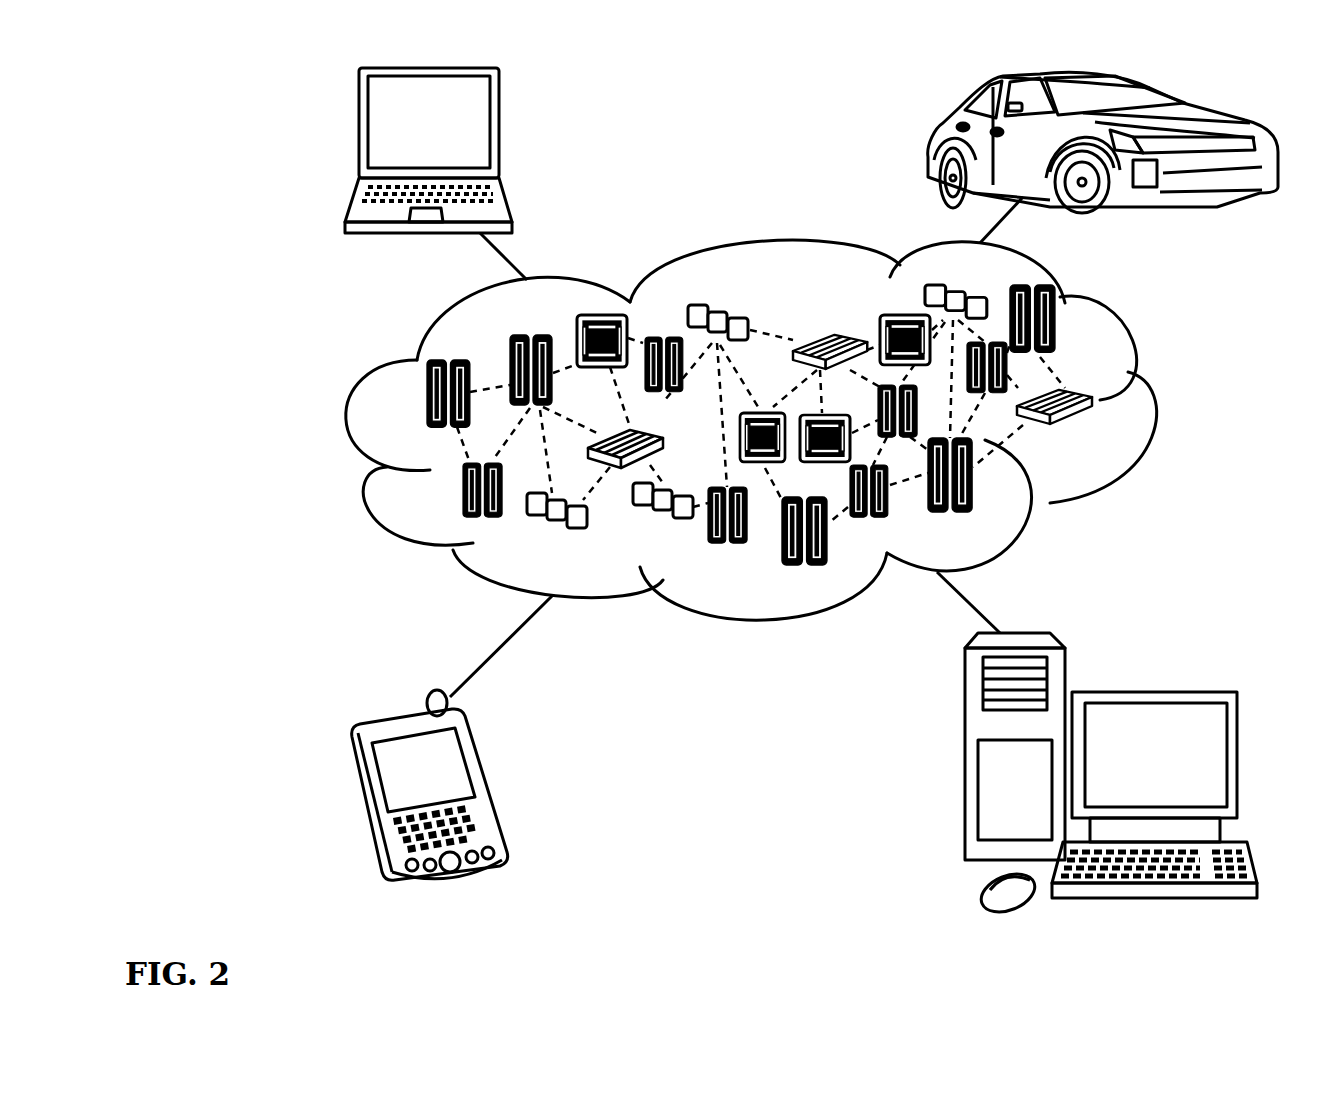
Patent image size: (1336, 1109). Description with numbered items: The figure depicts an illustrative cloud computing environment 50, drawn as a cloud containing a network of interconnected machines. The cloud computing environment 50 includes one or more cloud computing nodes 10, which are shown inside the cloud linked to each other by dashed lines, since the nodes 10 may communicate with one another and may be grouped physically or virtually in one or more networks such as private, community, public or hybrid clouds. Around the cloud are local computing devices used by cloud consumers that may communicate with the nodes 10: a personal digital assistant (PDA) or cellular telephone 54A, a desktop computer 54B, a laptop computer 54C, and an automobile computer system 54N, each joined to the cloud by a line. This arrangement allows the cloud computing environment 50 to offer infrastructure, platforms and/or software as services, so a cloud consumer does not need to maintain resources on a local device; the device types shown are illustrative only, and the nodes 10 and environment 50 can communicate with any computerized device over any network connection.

The cloud computing nodes 10 is at (1100, 436).
The cloud computing environment 50 is at (1153, 403).
The personal digital assistant (PDA) or cellular telephone 54A is at (487, 782).
The desktop computer 54B is at (1152, 692).
The laptop computer 54C is at (500, 128).
The automobile computer system 54N is at (932, 148).